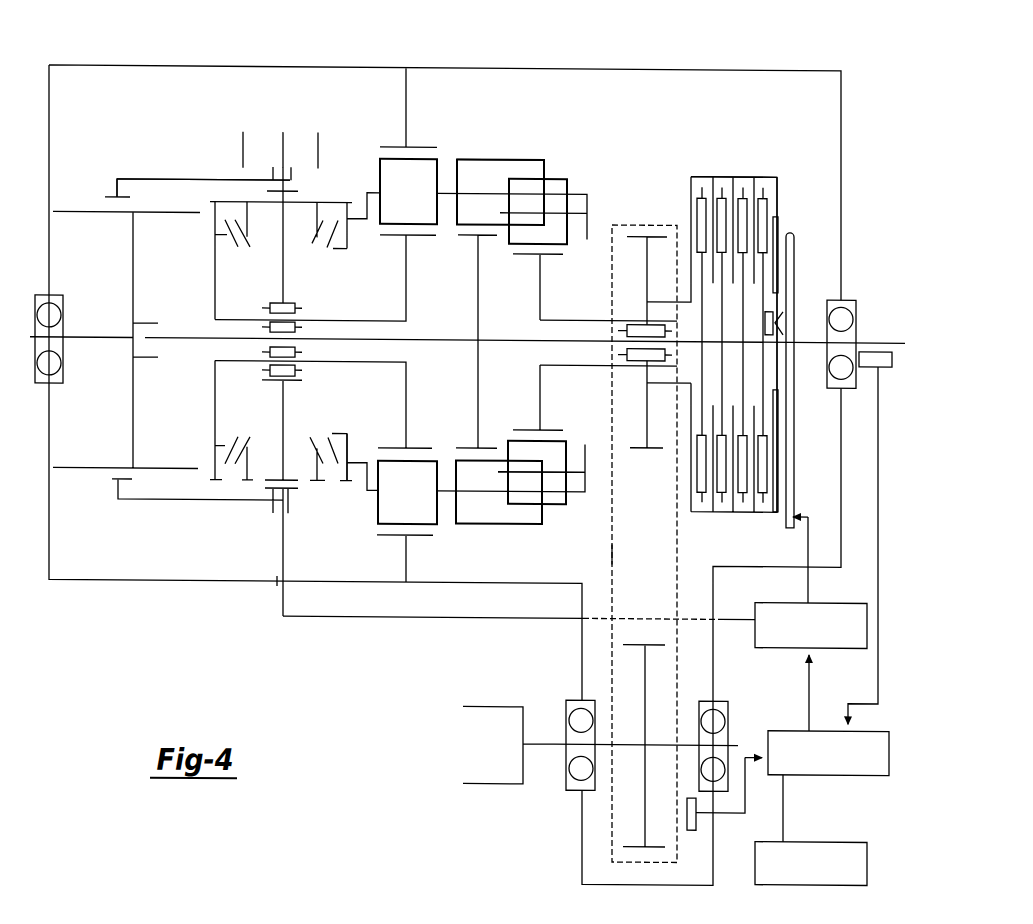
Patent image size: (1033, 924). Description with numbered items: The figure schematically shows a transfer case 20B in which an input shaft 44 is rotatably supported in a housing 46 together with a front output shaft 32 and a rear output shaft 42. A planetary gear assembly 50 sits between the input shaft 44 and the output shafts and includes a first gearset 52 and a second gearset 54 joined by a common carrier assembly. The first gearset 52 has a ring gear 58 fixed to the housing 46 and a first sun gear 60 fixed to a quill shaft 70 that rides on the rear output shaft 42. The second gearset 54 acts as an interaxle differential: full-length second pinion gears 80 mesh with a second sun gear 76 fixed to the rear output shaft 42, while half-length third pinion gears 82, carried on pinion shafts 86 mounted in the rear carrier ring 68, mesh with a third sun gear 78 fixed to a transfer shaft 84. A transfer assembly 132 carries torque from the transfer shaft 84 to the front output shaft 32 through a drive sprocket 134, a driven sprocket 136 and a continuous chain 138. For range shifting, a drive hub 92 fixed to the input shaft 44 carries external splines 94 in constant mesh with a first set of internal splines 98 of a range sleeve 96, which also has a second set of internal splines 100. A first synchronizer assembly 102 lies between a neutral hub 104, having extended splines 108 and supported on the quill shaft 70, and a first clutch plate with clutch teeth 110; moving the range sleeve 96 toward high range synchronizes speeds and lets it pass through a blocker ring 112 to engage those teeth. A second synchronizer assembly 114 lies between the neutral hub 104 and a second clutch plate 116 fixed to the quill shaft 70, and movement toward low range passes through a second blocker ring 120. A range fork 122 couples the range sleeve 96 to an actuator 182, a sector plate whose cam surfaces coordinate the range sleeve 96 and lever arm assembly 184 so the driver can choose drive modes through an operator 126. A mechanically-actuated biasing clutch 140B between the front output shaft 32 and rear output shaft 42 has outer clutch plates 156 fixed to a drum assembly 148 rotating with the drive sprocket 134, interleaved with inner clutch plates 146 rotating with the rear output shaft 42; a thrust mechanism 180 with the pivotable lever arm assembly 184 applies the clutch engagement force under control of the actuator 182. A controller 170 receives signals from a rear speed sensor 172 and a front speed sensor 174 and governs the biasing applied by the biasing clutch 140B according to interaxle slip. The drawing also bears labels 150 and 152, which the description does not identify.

The transfer case 20B is at (722, 36).
The housing 46 is at (824, 64).
The drive hub 92 is at (133, 412).
The first set of internal splines 98 is at (105, 196).
The range sleeve 96 is at (138, 177).
The external splines 94 is at (122, 207).
The input shaft 44 is at (77, 295).
The extended splines 108 is at (277, 198).
The second set of internal splines 100 is at (293, 194).
The second clutch plate 116 is at (268, 302).
The second blocker ring 120 is at (249, 222).
The neutral hub 104 is at (286, 251).
The quill shaft 70 is at (358, 318).
The second synchronizer assembly 114 is at (250, 426).
The blocker ring 112 is at (311, 458).
The first synchronizer assembly 102 is at (359, 426).
The external clutch teeth 110 is at (347, 476).
The range fork 122 is at (490, 615).
The first gearset 52 is at (438, 150).
The second pinion gears 80 is at (480, 165).
The second gearset 54 is at (544, 152).
The planetary gear assembly 50 is at (513, 147).
The ring gear 58 is at (591, 206).
The second sun gear 76 is at (478, 280).
The third sun gear 78 is at (540, 290).
The first sun gear 60 is at (416, 418).
The third pinion gears 82 is at (555, 450).
The rear carrier ring 68 is at (585, 443).
The pinion shaft 86 is at (585, 470).
The transfer shaft 84 is at (595, 318).
The transfer assembly 132 is at (692, 572).
The drive sprocket 134 is at (647, 272).
The driven sprocket 136 is at (647, 665).
The continuous chain 138 is at (612, 548).
The drum assembly 148 is at (720, 172).
The clutch plates 150 is at (692, 206).
The biasing clutch 140B is at (744, 152).
The outer clutch plates 156 is at (753, 183).
The clutch piston 152 is at (779, 215).
The thrust mechanism 180 is at (795, 286).
The inner clutch plates 146 is at (765, 428).
The lever arm assembly 184 is at (790, 500).
The rear output shaft 42 is at (803, 340).
The rear speed sensor 172 is at (890, 368).
The actuator 182 is at (836, 648).
The controller 170 is at (843, 770).
The operator 126 is at (866, 866).
The front speed sensor 174 is at (693, 825).
The front output shaft 32 is at (550, 745).